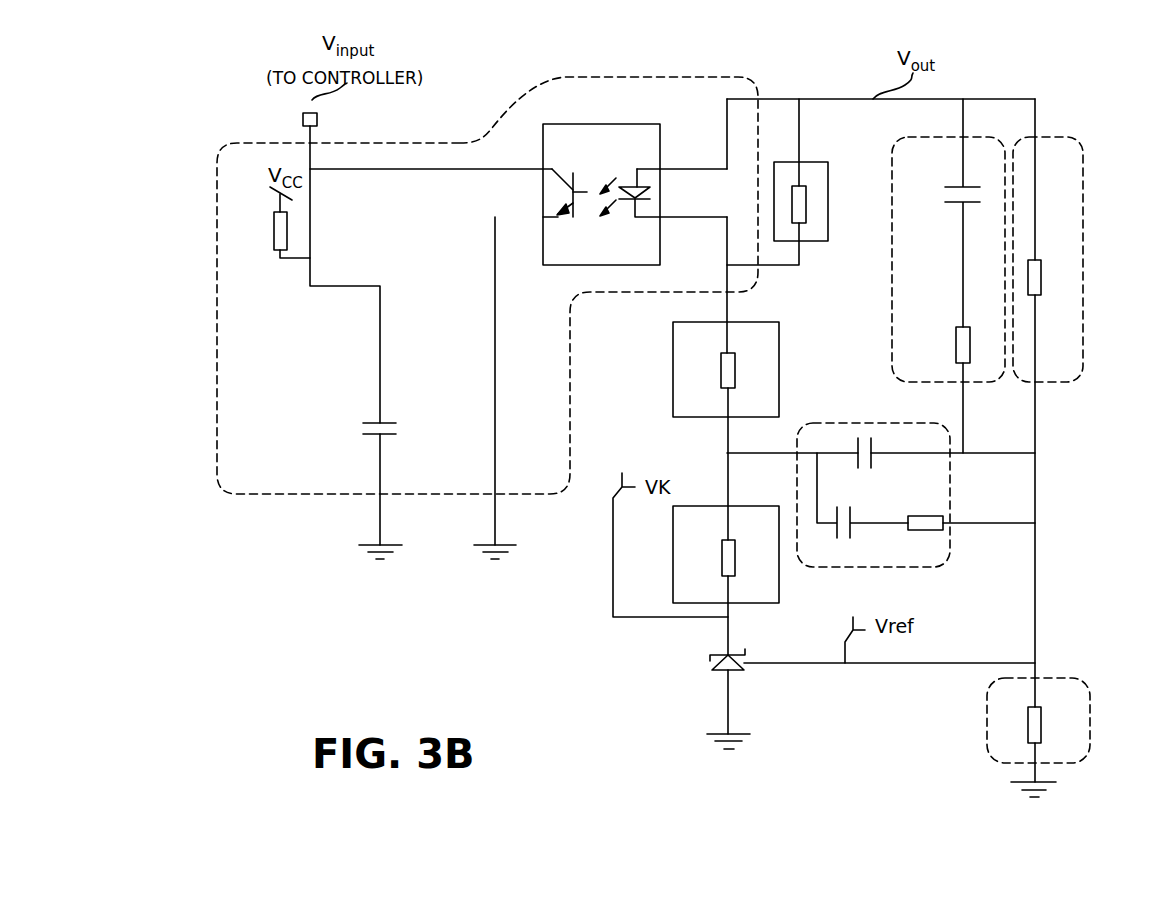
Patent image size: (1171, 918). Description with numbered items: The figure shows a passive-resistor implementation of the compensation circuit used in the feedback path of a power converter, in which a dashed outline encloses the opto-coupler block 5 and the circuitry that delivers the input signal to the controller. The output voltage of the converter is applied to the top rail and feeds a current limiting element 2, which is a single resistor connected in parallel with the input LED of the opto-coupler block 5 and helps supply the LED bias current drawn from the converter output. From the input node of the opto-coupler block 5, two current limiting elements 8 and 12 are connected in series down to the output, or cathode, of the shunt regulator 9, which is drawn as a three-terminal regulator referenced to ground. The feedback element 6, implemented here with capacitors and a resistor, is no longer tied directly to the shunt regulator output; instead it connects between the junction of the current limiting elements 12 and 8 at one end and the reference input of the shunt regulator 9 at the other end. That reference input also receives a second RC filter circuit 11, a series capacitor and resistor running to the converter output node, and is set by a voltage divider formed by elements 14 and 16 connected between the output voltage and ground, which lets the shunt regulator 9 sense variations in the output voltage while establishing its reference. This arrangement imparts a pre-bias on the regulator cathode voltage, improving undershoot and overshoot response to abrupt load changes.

The current limiting element 2 is at (830, 212).
The opto-coupler block 5 is at (566, 77).
The feedback element 6 is at (923, 565).
The current limiting element 8 is at (673, 364).
The shunt regulator 9 is at (713, 672).
The second RC filter circuit 11 is at (892, 310).
The current limiting element 12 is at (673, 547).
The voltage divider element 14 is at (987, 720).
The voltage divider element 16 is at (1085, 201).